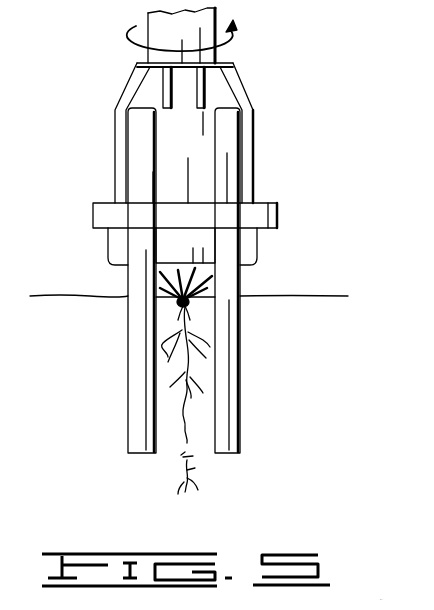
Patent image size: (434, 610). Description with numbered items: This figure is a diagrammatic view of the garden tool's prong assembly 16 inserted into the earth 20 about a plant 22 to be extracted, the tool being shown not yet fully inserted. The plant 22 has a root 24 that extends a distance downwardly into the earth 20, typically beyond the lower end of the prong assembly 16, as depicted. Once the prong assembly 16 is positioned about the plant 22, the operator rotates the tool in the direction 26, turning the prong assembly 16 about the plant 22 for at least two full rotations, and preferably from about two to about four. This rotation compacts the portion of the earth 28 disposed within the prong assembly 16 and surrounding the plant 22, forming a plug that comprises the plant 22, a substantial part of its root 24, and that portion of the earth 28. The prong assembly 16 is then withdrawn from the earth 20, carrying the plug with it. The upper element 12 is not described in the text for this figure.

The plant stem / label insert 12 is at (224, 9).
The prong assembly 16 is at (262, 156).
The earth 20 is at (276, 315).
The plant 22 is at (157, 288).
The root 24 is at (203, 427).
The direction 26 is at (129, 35).
The portion of the earth 28 is at (160, 373).